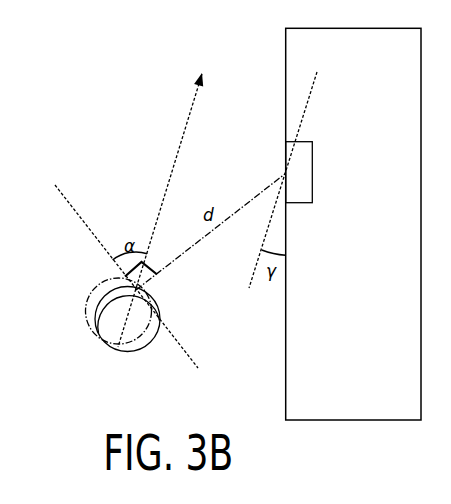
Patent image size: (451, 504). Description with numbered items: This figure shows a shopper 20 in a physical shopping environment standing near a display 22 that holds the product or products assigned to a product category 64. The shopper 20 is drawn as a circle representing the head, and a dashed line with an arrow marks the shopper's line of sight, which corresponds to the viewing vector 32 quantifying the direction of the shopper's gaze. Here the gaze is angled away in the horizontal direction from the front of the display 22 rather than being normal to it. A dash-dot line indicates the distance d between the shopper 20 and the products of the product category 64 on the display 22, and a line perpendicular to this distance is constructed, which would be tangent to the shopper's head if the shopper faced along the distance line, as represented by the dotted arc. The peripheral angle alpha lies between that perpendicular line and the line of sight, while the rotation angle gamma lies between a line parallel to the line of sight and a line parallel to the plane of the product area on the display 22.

The shopper 20 is at (112, 322).
The display 22 is at (356, 239).
The viewing vector 32 is at (173, 170).
The product category 64 is at (312, 155).